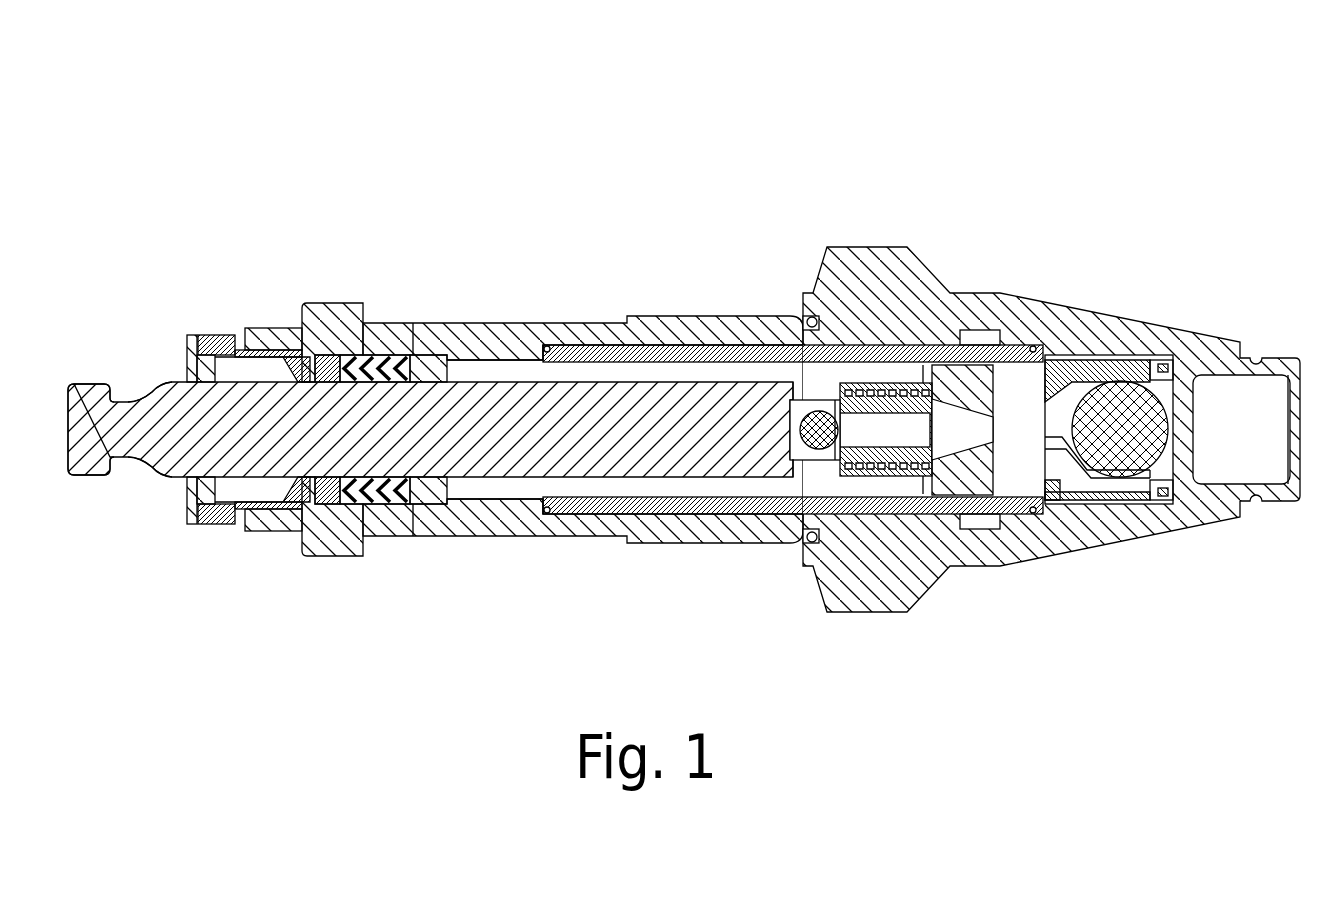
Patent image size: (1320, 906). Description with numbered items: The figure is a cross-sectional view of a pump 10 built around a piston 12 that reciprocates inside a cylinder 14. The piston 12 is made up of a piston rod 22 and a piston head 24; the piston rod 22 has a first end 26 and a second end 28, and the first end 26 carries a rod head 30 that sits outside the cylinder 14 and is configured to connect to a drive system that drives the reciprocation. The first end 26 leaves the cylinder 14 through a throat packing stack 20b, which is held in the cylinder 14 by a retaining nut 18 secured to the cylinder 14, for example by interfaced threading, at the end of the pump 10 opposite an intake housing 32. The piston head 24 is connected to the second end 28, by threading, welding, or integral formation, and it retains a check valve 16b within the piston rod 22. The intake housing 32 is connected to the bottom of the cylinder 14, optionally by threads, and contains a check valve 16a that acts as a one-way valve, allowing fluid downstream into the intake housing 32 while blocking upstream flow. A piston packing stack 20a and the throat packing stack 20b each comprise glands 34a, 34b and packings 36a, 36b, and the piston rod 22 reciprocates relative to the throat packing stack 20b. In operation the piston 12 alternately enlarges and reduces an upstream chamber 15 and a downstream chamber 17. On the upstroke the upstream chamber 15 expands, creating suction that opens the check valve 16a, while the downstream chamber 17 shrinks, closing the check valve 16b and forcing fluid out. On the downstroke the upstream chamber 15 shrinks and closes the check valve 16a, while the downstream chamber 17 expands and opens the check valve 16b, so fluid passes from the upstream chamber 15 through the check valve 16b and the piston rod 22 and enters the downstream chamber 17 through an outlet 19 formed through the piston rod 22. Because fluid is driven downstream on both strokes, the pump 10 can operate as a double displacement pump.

The pump 10 is at (636, 148).
The piston 12 is at (651, 483).
The cylinder 14 is at (556, 538).
The upstream chamber 15 is at (1069, 363).
The check valve 16a is at (1145, 382).
The check valve 16b is at (795, 380).
The downstream chamber 17 is at (620, 375).
The retaining nut 18 is at (222, 523).
The outlet 19 is at (805, 404).
The piston packing stack 20a is at (928, 361).
The throat packing stack 20b is at (418, 354).
The piston rod 22 is at (695, 392).
The piston head 24 is at (1003, 403).
The first end 26 is at (168, 395).
The second end 28 is at (807, 478).
The rod head 30 is at (92, 478).
The intake housing 32 is at (1000, 552).
The gland 34a is at (428, 496).
The gland 34b is at (332, 497).
The packing 36a is at (408, 354).
The packing 36b is at (398, 506).